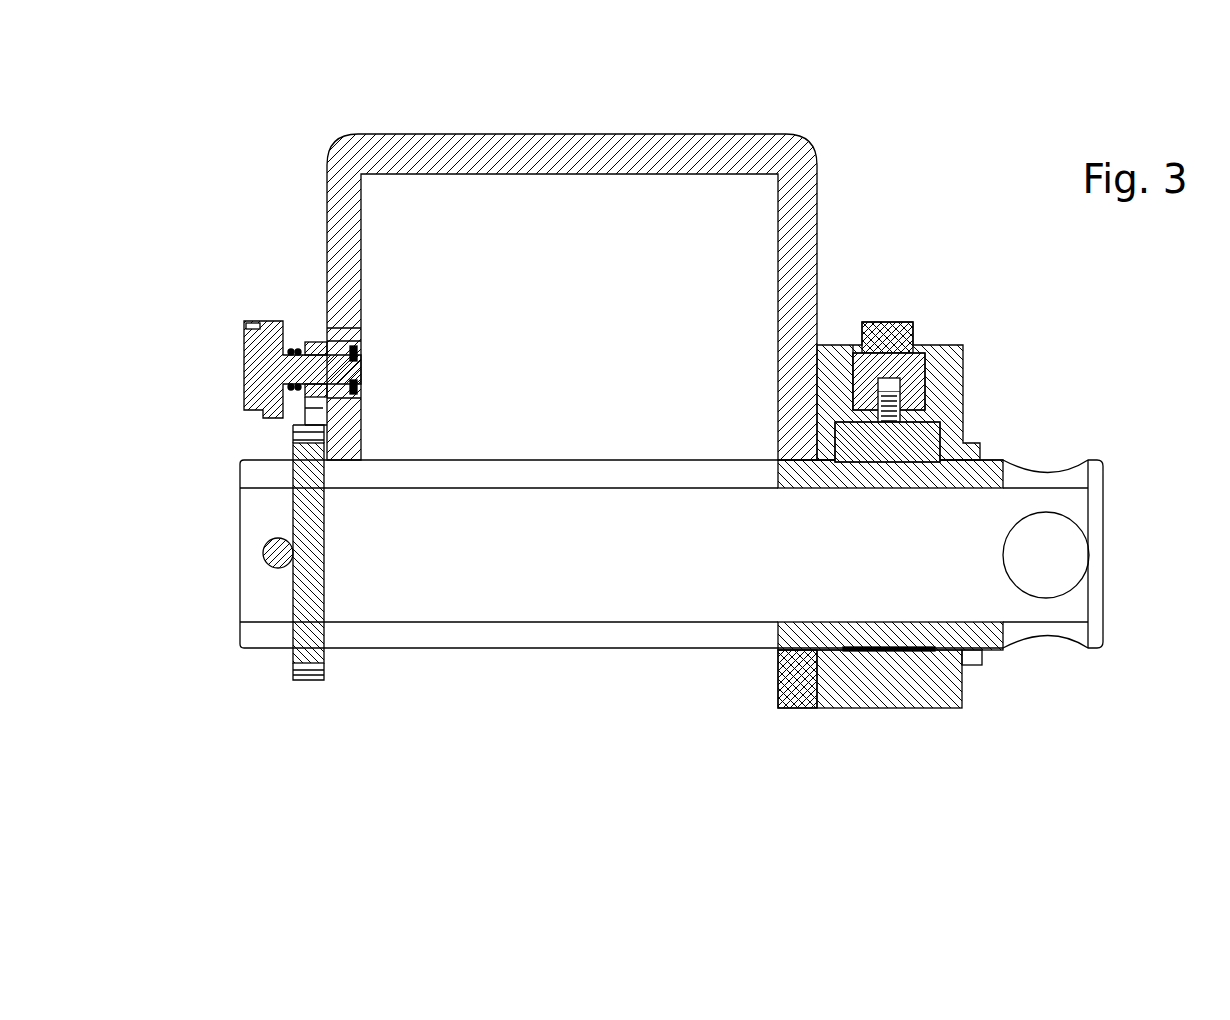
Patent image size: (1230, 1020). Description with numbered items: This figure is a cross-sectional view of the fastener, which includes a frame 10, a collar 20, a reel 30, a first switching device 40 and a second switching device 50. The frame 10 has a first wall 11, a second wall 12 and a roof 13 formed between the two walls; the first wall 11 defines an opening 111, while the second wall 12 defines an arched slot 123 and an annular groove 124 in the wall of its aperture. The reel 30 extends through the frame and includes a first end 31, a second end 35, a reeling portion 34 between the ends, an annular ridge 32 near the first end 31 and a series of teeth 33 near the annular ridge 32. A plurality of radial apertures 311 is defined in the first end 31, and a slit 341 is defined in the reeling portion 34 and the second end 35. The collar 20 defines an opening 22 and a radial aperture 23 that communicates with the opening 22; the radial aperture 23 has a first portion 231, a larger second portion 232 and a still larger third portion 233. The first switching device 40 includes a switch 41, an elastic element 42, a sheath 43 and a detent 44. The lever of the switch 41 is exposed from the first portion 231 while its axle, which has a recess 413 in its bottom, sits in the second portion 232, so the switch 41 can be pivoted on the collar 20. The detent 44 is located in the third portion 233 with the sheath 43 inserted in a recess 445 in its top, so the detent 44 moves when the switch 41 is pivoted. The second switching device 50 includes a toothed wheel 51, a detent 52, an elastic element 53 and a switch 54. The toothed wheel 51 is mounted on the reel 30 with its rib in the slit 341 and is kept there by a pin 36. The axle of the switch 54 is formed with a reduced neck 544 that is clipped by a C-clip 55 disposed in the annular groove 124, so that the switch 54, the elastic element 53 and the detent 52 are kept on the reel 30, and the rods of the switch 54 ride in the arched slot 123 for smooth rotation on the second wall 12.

The frame 10 is at (622, 120).
The first wall 11 is at (797, 332).
The second wall 12 is at (345, 232).
The roof 13 is at (515, 146).
The opening 111 is at (792, 462).
The arched slot 123 is at (345, 336).
The annular groove 124 is at (362, 396).
The collar 20 is at (936, 735).
The opening 22 is at (856, 660).
The radial aperture 23 is at (960, 400).
The teeth 33 is at (912, 660).
The first portion 231 is at (865, 350).
The second portion 232 is at (857, 378).
The third portion 233 is at (857, 416).
The reel 30 is at (660, 668).
The first end 31 is at (1036, 632).
The radial apertures 311 is at (1048, 582).
The annular ridge 32 is at (971, 655).
The reeling portion 34 is at (577, 582).
The slit 341 is at (488, 480).
The second end 35 is at (273, 590).
The pin 36 is at (272, 553).
The first switching device 40 is at (920, 250).
The switch 41 is at (876, 405).
The recess 413 is at (892, 392).
The elastic element 42 is at (906, 412).
The sheath 43 is at (927, 416).
The detent 44 is at (950, 455).
The recess 445 is at (962, 430).
The second switching device 50 is at (232, 212).
The toothed wheel 51 is at (305, 627).
The detent 52 is at (314, 348).
The elastic element 53 is at (292, 348).
The switch 54 is at (253, 333).
The neck 544 is at (358, 387).
The C-clip 55 is at (358, 353).